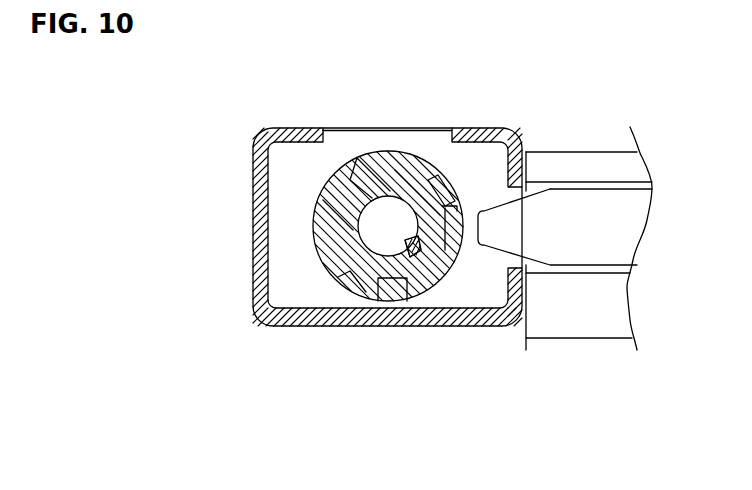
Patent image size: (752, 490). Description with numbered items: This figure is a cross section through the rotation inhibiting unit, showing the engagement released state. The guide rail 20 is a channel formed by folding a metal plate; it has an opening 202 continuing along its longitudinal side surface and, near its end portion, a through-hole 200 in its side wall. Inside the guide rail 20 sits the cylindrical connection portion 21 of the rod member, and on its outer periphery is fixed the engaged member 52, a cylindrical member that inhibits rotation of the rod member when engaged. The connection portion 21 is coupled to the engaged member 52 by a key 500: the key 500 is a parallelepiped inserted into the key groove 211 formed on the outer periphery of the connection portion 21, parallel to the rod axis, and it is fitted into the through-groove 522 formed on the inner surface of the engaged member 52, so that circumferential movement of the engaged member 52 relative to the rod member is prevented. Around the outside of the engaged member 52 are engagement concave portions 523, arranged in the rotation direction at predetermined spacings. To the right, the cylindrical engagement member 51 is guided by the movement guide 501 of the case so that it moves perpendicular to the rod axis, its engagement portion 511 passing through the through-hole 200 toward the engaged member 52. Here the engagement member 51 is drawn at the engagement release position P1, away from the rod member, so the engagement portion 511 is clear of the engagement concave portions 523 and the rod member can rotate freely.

The guide rail 20 is at (257, 192).
The opening 202 is at (340, 137).
The through-hole 200 is at (517, 187).
The engaged member 52 is at (387, 162).
The connection portion 21 is at (378, 232).
The key groove 211 is at (387, 262).
The key 500 is at (406, 262).
The through-groove 522 is at (411, 257).
The engagement concave portions 523 is at (455, 245).
The engagement member 51 is at (573, 210).
The engagement portion 511 is at (525, 242).
The movement guide 501 is at (605, 317).
The engagement release position P1 is at (602, 208).